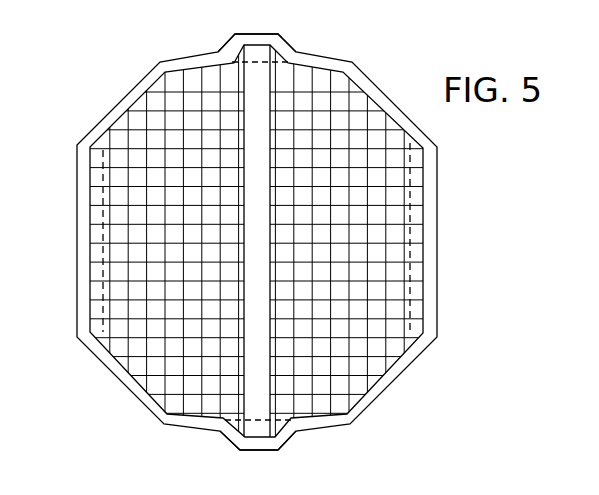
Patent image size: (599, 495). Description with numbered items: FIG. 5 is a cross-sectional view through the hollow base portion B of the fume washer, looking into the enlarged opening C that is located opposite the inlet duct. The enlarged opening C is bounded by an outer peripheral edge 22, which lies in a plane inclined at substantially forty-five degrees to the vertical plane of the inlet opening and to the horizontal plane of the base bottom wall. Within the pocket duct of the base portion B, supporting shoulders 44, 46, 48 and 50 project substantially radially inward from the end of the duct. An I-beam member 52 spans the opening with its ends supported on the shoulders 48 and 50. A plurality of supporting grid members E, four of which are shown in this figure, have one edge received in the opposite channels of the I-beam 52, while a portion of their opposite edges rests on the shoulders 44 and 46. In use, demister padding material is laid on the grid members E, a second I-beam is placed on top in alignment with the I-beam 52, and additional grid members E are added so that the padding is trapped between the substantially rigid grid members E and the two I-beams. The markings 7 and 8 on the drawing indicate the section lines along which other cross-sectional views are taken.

The outer peripheral edge 22 is at (359, 92).
The hollow base portion B is at (257, 242).
The enlarged opening C is at (386, 126).
The supporting grid members E is at (137, 136).
The supporting shoulder 44 is at (103, 200).
The supporting shoulder 46 is at (410, 212).
The supporting shoulder 48 is at (281, 61).
The supporting shoulder 50 is at (279, 421).
The I-beam member 52 is at (254, 86).
The section line 7- 7 is at (233, 138).
The section line 8- 8 is at (400, 250).